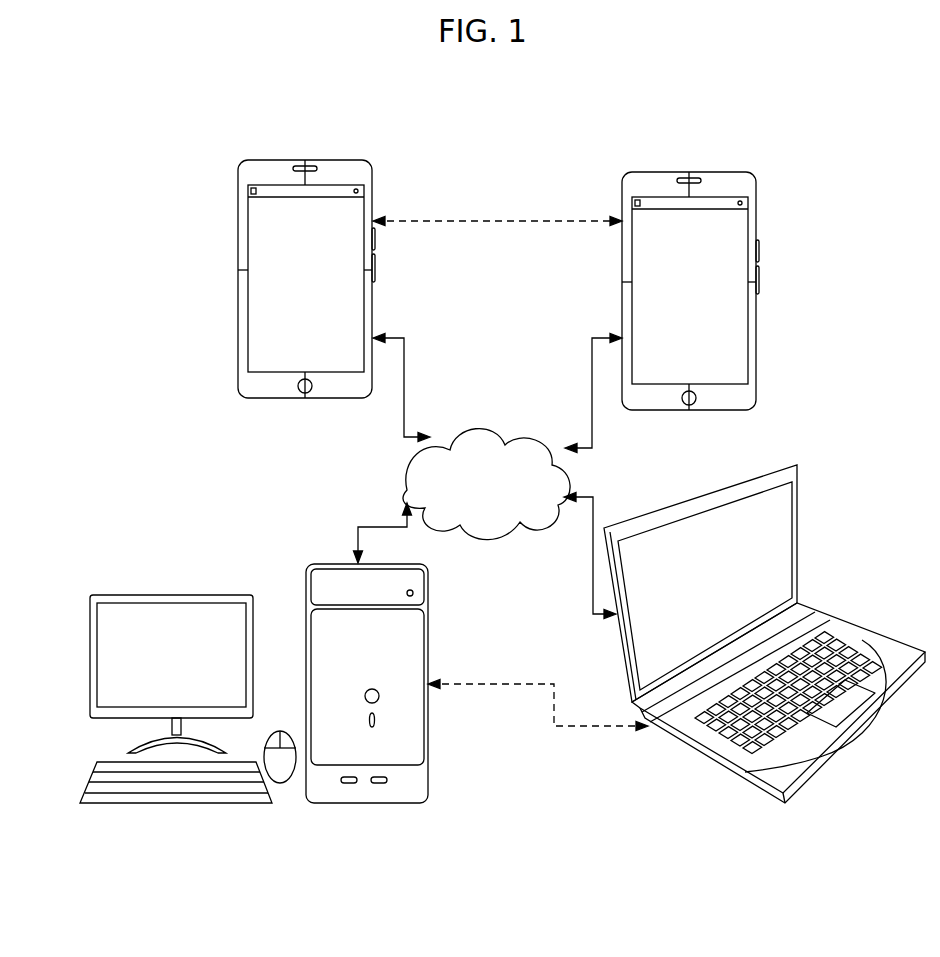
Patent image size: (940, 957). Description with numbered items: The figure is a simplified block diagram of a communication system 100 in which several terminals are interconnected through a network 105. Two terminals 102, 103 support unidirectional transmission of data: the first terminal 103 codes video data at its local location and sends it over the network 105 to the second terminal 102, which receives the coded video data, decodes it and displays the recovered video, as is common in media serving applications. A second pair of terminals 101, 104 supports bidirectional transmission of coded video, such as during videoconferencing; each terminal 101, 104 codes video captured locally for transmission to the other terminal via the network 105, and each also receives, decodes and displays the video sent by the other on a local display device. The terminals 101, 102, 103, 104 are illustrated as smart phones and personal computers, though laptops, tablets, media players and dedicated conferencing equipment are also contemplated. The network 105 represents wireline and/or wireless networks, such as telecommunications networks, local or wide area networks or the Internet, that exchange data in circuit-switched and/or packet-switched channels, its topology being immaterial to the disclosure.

The communication system 100 is at (107, 134).
The terminal 101 is at (238, 265).
The second terminal 102 is at (431, 769).
The first terminal 103 is at (620, 638).
The terminal 104 is at (620, 253).
The network 105 is at (491, 428).